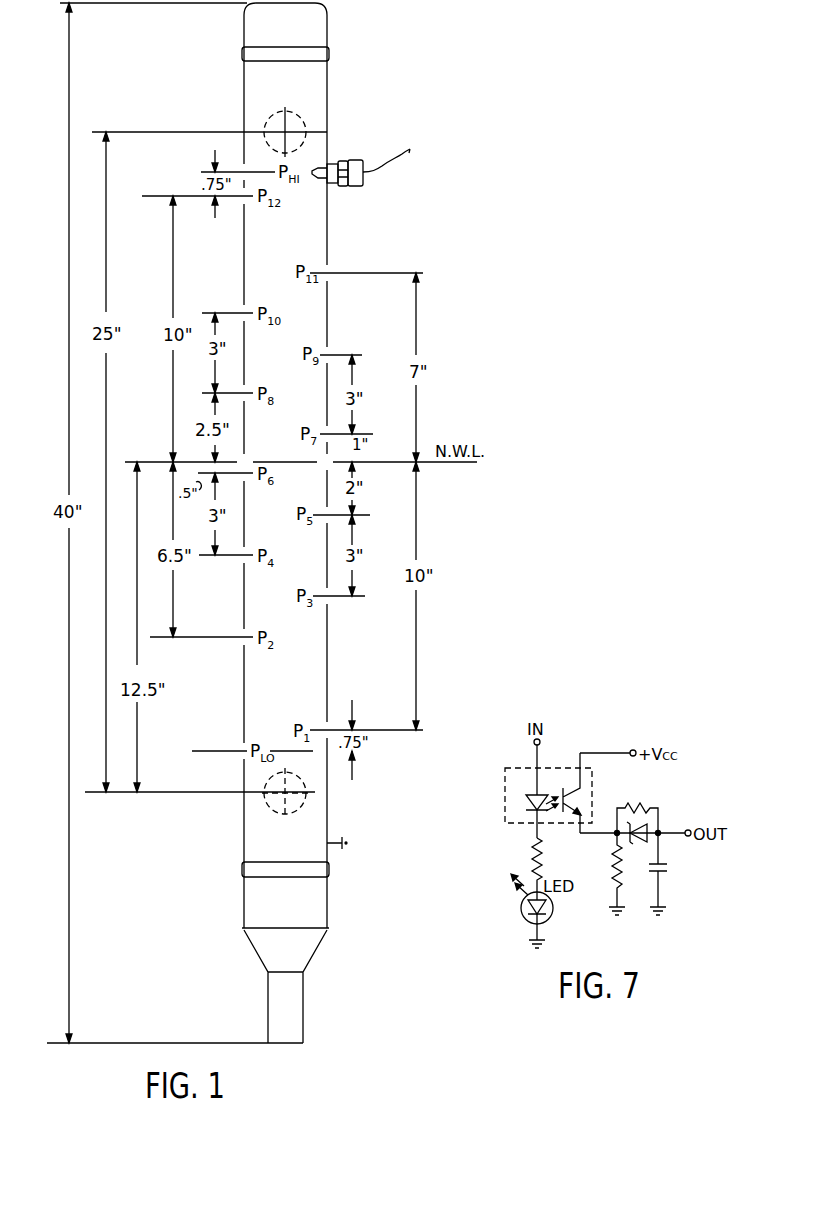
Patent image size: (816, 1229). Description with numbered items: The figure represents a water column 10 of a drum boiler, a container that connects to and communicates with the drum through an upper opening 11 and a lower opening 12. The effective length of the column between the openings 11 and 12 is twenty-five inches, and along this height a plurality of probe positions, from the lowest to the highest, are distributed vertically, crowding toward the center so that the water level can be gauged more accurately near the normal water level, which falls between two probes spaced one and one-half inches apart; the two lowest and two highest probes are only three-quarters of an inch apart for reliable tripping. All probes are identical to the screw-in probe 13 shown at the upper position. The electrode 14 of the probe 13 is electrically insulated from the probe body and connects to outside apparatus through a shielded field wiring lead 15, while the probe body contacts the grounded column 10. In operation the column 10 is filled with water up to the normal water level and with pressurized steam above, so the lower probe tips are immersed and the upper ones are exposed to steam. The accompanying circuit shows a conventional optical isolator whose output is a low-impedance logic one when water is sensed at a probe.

The water column 10 is at (355, 858).
The opening 11 is at (292, 112).
The opening 12 is at (277, 810).
The screw-in probe 13 is at (347, 160).
The electrode 14 is at (320, 182).
The shielded field wiring lead 15 is at (386, 176).